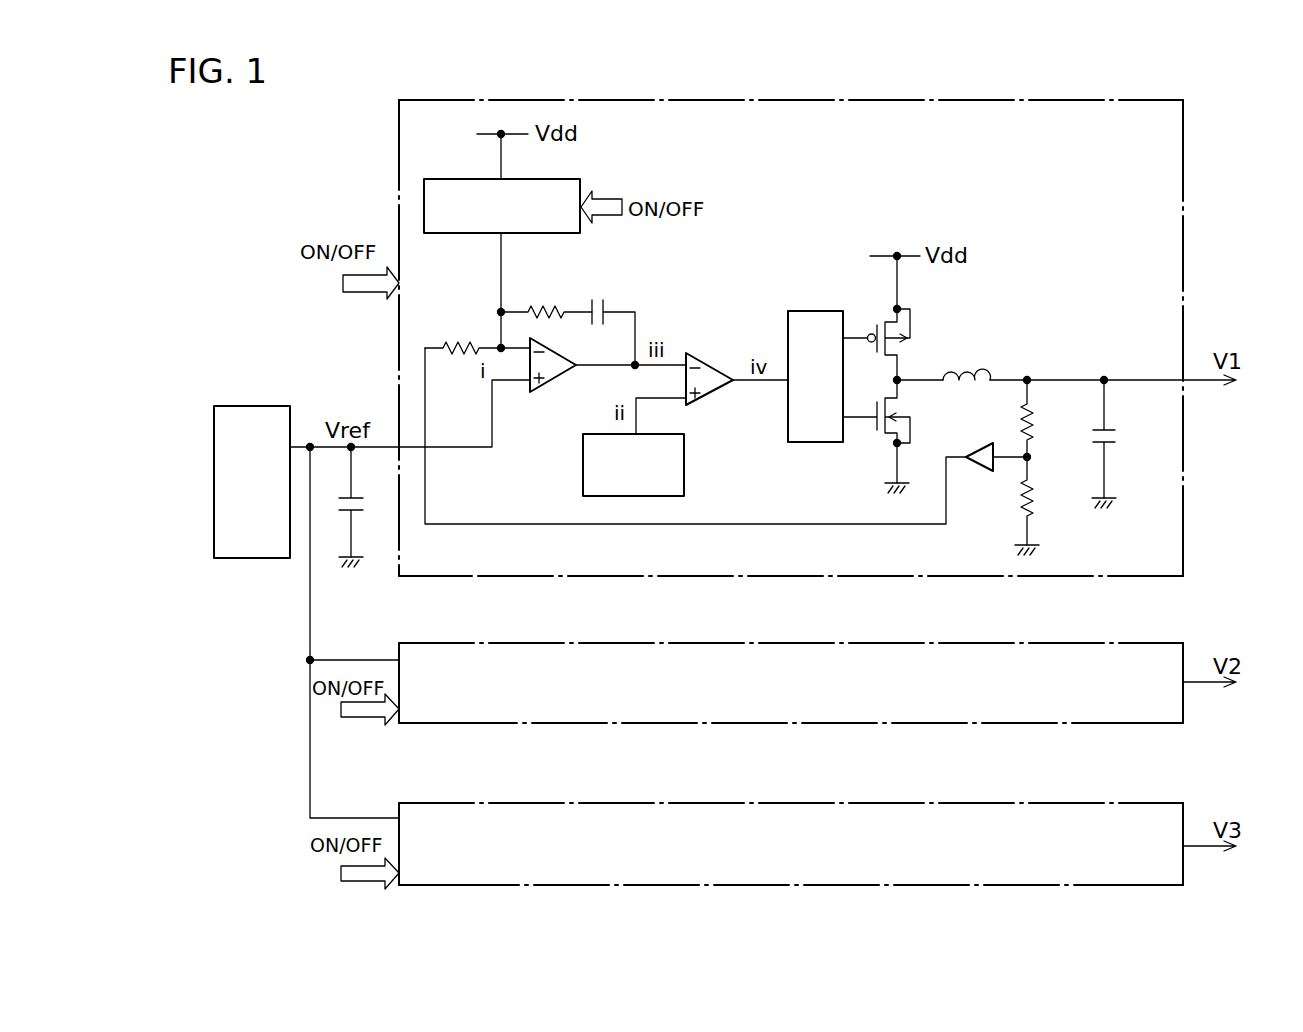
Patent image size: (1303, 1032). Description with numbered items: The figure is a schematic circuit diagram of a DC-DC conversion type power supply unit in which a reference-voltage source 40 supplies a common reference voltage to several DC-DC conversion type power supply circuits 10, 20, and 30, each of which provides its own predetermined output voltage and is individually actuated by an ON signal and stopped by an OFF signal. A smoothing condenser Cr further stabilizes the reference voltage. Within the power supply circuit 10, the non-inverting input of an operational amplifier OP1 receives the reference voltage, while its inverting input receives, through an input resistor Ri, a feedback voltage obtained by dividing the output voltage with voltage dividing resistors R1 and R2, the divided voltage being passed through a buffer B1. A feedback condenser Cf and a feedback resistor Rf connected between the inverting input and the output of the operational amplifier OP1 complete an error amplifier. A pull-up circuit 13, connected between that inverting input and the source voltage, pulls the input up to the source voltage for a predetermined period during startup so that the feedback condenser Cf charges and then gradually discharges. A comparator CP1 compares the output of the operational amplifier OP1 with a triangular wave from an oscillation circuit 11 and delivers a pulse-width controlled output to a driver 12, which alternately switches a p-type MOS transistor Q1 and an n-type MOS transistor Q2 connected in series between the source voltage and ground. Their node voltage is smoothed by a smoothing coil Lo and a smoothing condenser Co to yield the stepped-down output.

The DC-DC conversion type power supply circuit 10 is at (398, 131).
The oscillation circuit 11 is at (684, 463).
The driver 12 is at (831, 309).
The pull-up circuit 13 is at (555, 178).
The DC-DC conversion type power supply circuit 20 is at (397, 647).
The DC-DC conversion type power supply circuit 30 is at (397, 807).
The reference-voltage source 40 is at (268, 406).
The input resistor Ri is at (477, 332).
The feedback resistor Rf is at (546, 298).
The feedback condenser Cf is at (610, 321).
The operational amplifier OP1 is at (551, 382).
The comparator CP1 is at (707, 356).
The p-type MOS transistor Q1 is at (894, 337).
The n-type MOS transistor Q2 is at (894, 431).
The smoothing coil Lo is at (967, 361).
The voltage dividing resistor R1 is at (1045, 418).
The voltage dividing resistor R2 is at (1045, 501).
The smoothing condenser Co is at (1121, 439).
The buffer B1 is at (978, 473).
The smoothing condenser Cr is at (365, 502).